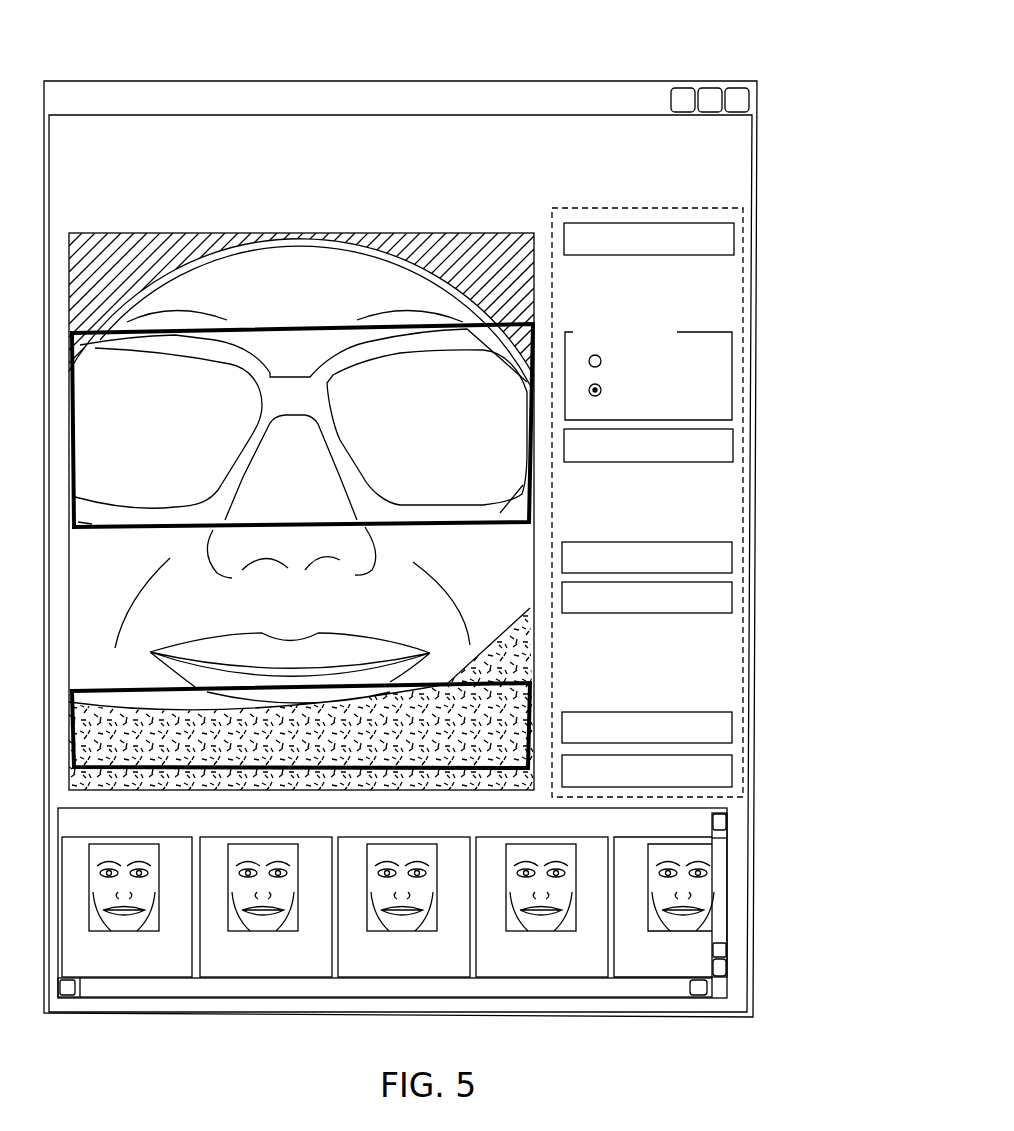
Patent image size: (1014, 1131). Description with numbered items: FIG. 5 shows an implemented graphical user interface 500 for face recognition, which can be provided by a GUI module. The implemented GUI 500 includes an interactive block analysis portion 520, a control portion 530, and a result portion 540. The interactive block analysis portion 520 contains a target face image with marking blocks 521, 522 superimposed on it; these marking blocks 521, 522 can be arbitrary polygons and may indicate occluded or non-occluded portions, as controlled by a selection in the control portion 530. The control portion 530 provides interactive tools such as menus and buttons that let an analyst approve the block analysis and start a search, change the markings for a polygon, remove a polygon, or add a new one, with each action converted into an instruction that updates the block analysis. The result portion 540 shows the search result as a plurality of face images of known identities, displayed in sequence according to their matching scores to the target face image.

The implemented graphical user interface 500 is at (638, 69).
The interactive block analysis portion 520 is at (290, 267).
The marking block 521 is at (120, 528).
The marking block 522 is at (93, 690).
The control portion 530 is at (745, 291).
The result portion 540 is at (667, 832).